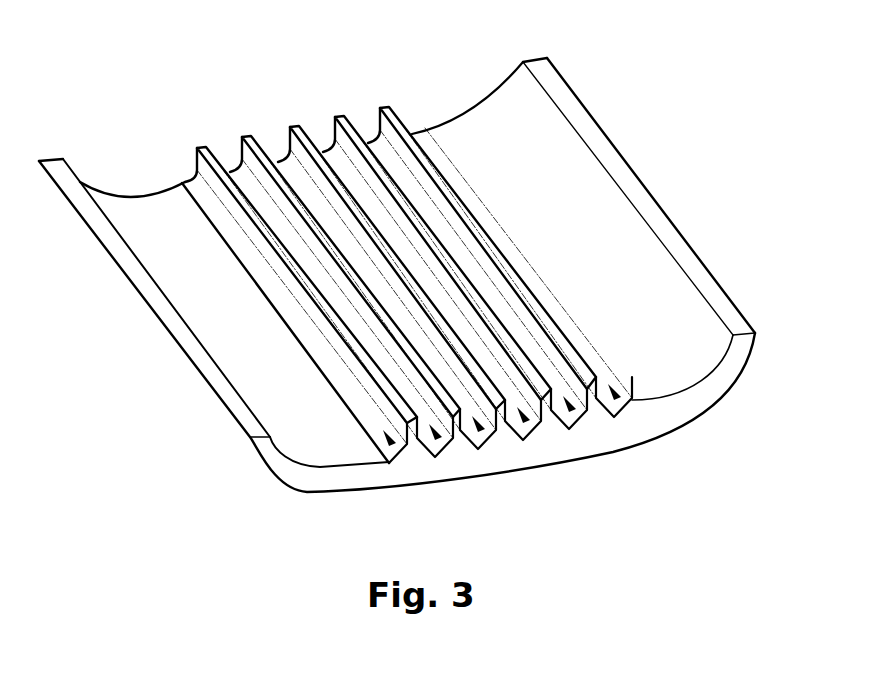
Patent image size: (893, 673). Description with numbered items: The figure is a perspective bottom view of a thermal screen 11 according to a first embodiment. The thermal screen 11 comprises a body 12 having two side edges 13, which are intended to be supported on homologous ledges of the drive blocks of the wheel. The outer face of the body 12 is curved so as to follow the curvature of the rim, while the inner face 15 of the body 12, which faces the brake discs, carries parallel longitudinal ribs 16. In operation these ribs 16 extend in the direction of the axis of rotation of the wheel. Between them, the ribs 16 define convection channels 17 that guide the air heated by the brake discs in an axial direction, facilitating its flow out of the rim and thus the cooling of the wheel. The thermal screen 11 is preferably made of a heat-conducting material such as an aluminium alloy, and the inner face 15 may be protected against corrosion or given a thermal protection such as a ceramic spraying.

The thermal screen 11 is at (223, 52).
The body 12 is at (403, 481).
The side edges 13 is at (150, 292).
The inner face 15 is at (234, 324).
The longitudinal ribs 16 is at (198, 147).
The convection channels 17 is at (444, 447).